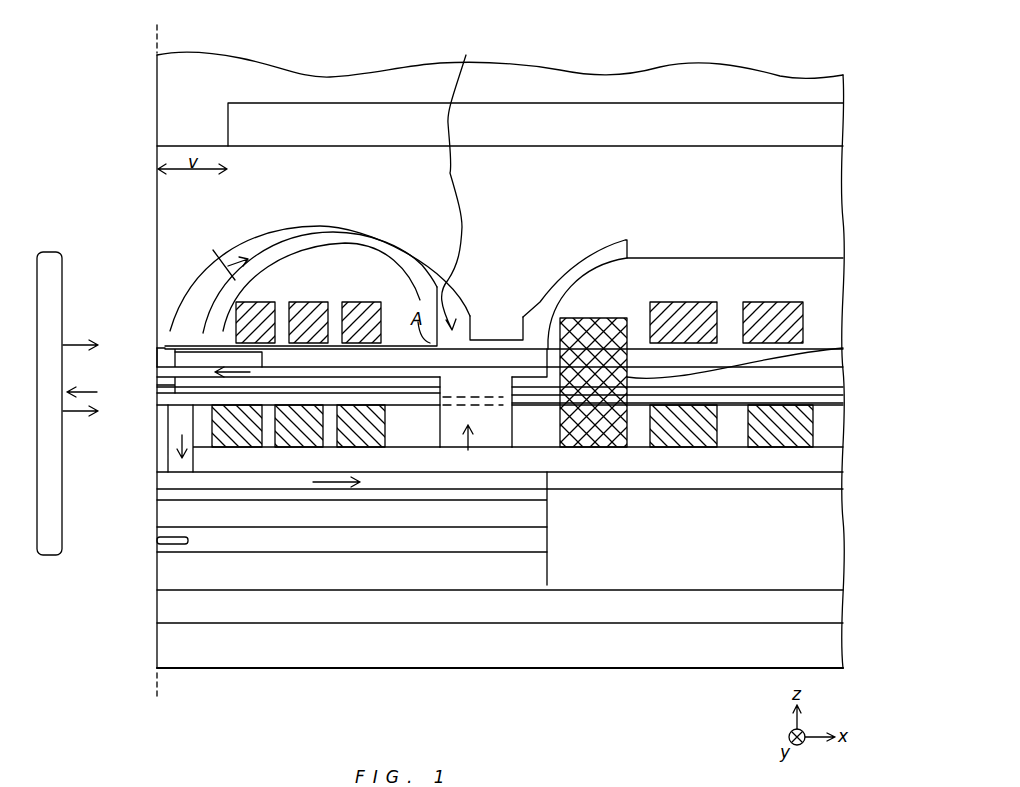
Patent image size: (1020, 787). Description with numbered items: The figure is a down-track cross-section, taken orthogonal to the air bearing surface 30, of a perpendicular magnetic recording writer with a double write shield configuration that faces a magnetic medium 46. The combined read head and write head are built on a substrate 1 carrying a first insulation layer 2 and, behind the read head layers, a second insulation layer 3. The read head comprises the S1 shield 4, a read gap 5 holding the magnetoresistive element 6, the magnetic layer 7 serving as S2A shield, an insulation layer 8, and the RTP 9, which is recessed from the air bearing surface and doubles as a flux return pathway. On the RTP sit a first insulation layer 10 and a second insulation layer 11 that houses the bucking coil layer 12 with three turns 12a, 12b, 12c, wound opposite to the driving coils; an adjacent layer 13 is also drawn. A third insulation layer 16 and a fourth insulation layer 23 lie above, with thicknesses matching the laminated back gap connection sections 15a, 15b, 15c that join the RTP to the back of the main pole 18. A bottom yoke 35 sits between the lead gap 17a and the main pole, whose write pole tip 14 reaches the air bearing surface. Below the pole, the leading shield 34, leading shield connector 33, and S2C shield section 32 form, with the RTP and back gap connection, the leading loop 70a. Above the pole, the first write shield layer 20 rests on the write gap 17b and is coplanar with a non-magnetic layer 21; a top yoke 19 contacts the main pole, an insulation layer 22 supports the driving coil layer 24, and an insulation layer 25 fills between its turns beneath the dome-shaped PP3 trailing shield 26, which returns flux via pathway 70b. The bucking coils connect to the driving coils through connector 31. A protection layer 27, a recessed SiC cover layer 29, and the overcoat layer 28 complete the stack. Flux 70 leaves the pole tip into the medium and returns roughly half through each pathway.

The substrate 1 is at (172, 645).
The first insulation layer 2 is at (172, 603).
The second insulation layer 3 is at (822, 500).
The S1 shield 4 is at (172, 568).
The read gap 5 is at (172, 536).
The magnetoresistive element 6 is at (160, 541).
The magnetic layer 7 is at (170, 514).
The insulation layer 8 is at (175, 497).
The RTP 9 is at (175, 486).
The first insulation layer 10 is at (170, 452).
The second insulation layer 11 is at (270, 438).
The bucking coil layer 12 is at (797, 433).
The bucking coil turn 12a is at (222, 442).
The bucking coil turn 12b is at (298, 438).
The bucking coil turn 12c is at (372, 438).
The insulating layer 13 is at (170, 472).
The write pole tip 14 is at (175, 370).
The lower BGC section 15a is at (503, 392).
The BGC section 15b is at (507, 403).
The uppermost BGC section 15c is at (514, 410).
The third insulation layer 16 is at (427, 395).
The lead gap 17a is at (175, 380).
The write gap 17b is at (170, 355).
The main pole 18 is at (515, 372).
The top yoke 19 is at (488, 358).
The first write shield layer 20 is at (185, 350).
The non-magnetic layer 21 is at (180, 333).
The insulation layer 22 is at (197, 320).
The fourth insulation layer 23 is at (440, 397).
The driving coil layer 24 is at (268, 322).
The insulation layer 25 is at (225, 300).
The PP3 trailing shield 26 is at (207, 288).
The protection layer 27 is at (167, 227).
The overcoat layer 28 is at (165, 103).
The cover layer 29 is at (828, 122).
The air bearing surface 30 is at (157, 22).
The connector 31 is at (820, 352).
The S2C shield section 32 is at (166, 432).
The leading shield connector 33 is at (165, 408).
The leading shield 34 is at (173, 393).
The bottom yoke 35 is at (388, 345).
The magnetic medium 46 is at (46, 555).
The flux 70 is at (207, 690).
The leading loop pathway 70a is at (330, 690).
The trailing return pathway 70b is at (275, 192).